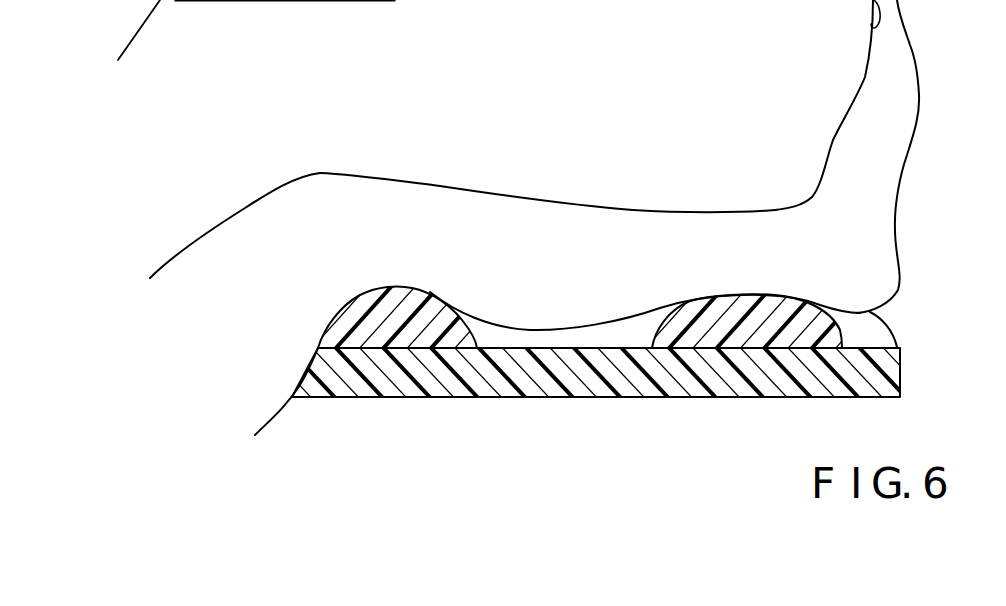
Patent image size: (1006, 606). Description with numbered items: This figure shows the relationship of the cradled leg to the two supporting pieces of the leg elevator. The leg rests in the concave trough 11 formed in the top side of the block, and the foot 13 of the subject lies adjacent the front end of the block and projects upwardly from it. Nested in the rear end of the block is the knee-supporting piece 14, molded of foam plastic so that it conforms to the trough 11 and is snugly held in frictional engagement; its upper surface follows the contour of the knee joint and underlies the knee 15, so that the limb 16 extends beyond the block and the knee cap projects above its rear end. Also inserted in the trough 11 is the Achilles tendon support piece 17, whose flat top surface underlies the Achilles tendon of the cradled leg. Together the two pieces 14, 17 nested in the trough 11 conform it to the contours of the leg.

The concave trough 11 is at (619, 355).
The foot 13 is at (908, 82).
The knee-supporting piece 14 is at (428, 302).
The knee 15 is at (337, 173).
The limb 16 is at (228, 245).
The Achilles tendon support piece 17 is at (757, 328).